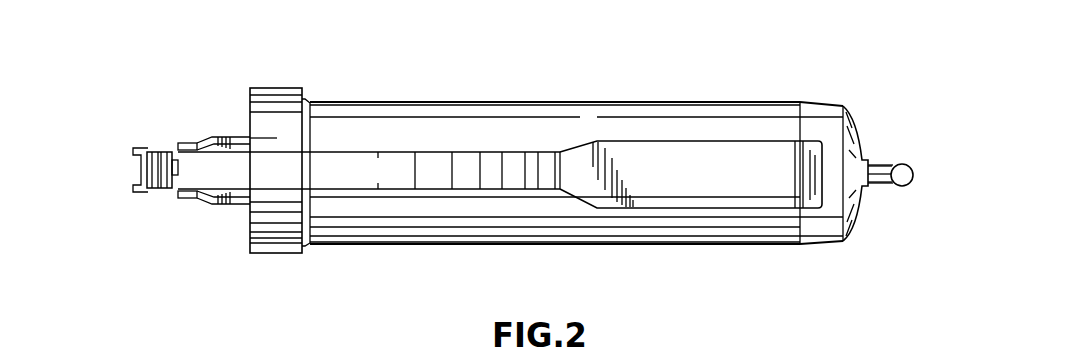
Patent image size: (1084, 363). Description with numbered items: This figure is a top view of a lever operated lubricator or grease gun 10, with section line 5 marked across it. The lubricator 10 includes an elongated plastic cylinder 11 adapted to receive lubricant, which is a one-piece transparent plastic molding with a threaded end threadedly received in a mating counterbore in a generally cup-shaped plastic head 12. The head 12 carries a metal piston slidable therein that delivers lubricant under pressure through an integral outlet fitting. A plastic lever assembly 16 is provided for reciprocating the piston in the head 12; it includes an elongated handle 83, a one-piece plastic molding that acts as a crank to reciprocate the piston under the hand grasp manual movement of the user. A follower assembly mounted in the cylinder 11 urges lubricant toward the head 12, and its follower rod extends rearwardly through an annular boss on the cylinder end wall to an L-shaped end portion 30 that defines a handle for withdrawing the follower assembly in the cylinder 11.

The section line 5- 5 is at (105, 168).
The lever operated lubricator 10 is at (412, 256).
The cylinder 11 is at (717, 245).
The head 12 is at (275, 253).
The lever assembly 16 is at (132, 185).
The L-shaped end portion 30 is at (882, 188).
The handle 83 is at (513, 162).